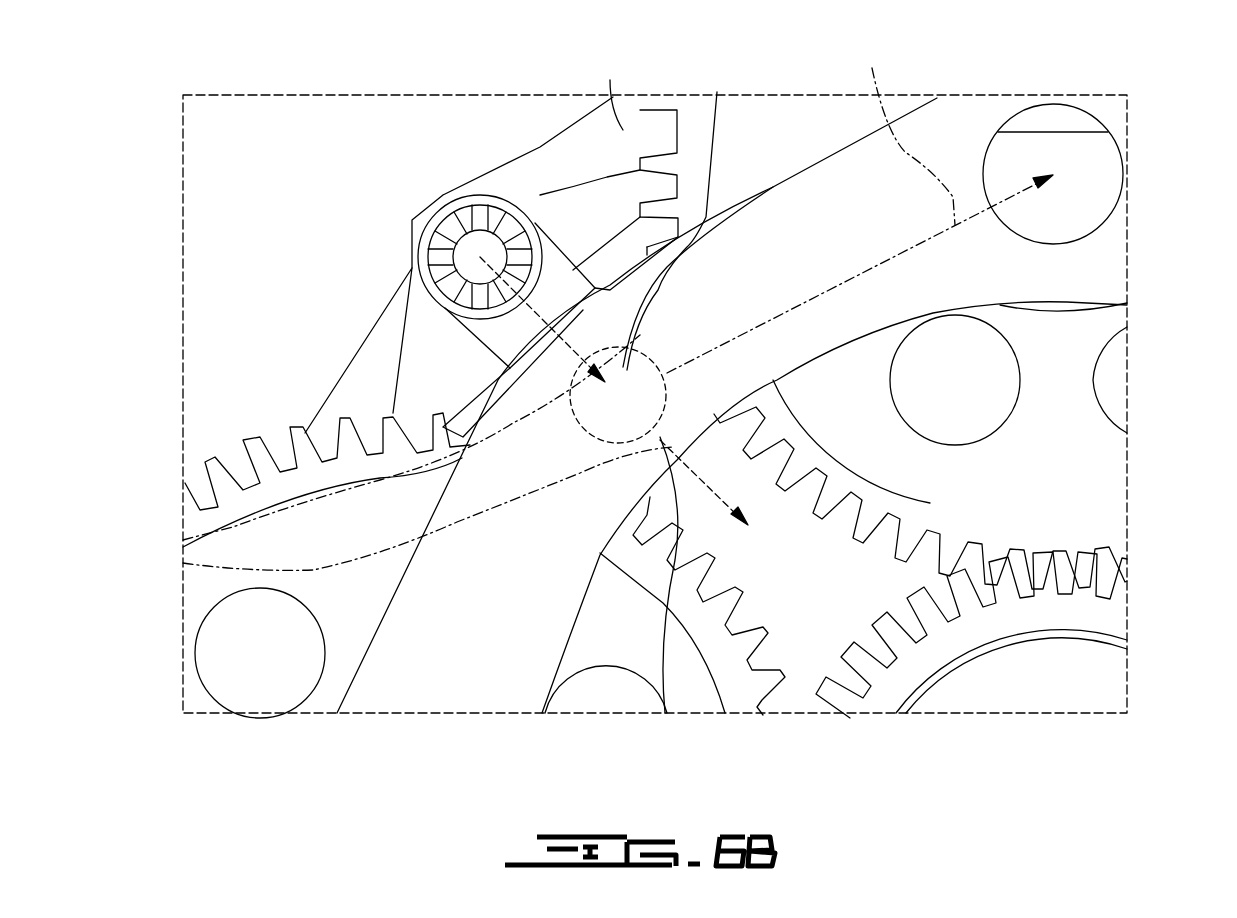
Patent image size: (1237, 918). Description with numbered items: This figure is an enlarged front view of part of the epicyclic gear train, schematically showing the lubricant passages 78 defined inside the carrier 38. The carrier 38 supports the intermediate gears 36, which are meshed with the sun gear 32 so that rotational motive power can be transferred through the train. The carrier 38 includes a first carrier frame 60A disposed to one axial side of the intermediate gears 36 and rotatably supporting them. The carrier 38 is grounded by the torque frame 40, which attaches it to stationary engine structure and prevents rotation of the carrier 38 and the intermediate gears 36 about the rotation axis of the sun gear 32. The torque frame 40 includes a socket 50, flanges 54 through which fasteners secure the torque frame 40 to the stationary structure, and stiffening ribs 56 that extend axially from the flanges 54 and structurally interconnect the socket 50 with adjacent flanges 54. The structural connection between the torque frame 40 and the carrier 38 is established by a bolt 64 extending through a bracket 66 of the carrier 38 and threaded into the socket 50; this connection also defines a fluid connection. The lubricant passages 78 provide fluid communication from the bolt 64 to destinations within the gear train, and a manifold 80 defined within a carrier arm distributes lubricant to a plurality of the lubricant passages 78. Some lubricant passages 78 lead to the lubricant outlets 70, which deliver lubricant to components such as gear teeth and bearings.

The sun gear 32 is at (1113, 628).
The intermediate gears 36 is at (700, 133).
The carrier 38 is at (489, 619).
The torque frame 40 is at (623, 130).
The socket 50 is at (440, 192).
The flange 54 is at (613, 108).
The stiffening rib 56 is at (587, 207).
The first carrier frame 60A is at (487, 617).
The bolt 64 is at (450, 245).
The bracket 66 is at (492, 315).
The lubricant outlets 70 is at (1000, 190).
The lubricant passages 78 is at (158, 548).
The manifold 80 is at (632, 350).